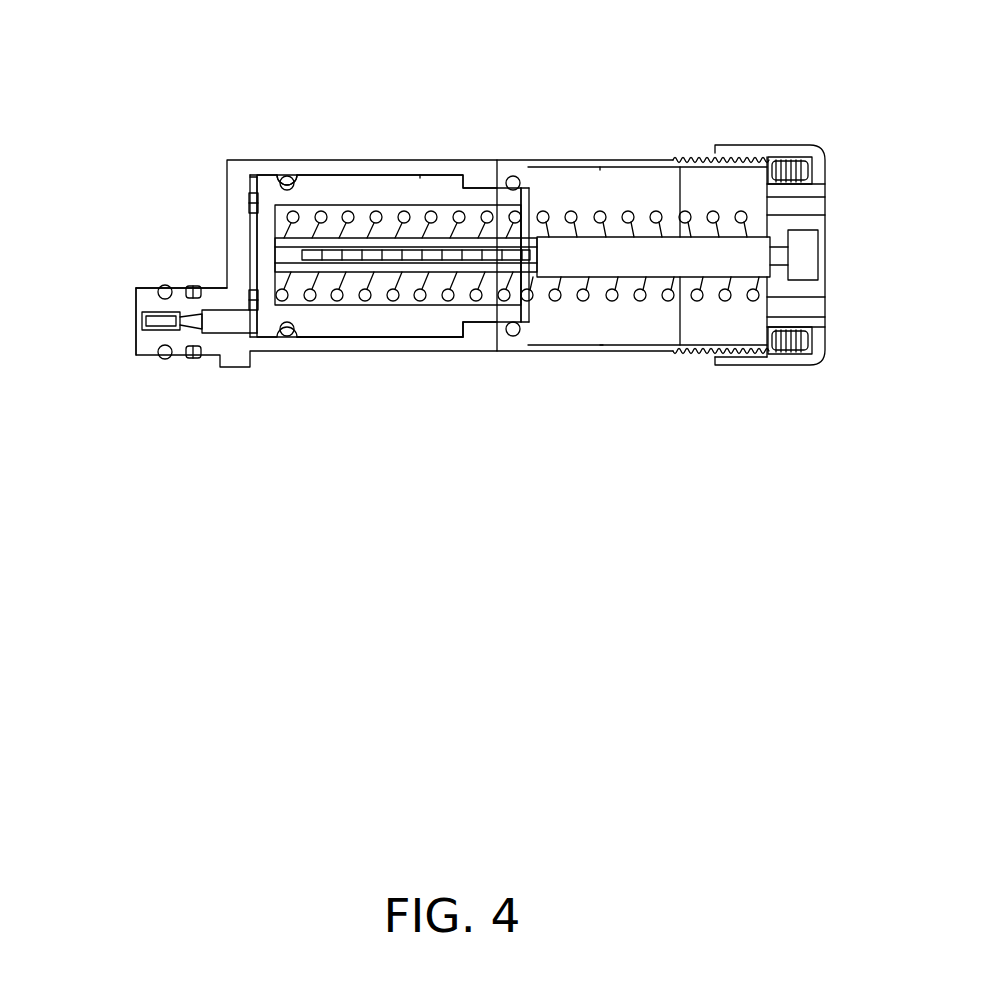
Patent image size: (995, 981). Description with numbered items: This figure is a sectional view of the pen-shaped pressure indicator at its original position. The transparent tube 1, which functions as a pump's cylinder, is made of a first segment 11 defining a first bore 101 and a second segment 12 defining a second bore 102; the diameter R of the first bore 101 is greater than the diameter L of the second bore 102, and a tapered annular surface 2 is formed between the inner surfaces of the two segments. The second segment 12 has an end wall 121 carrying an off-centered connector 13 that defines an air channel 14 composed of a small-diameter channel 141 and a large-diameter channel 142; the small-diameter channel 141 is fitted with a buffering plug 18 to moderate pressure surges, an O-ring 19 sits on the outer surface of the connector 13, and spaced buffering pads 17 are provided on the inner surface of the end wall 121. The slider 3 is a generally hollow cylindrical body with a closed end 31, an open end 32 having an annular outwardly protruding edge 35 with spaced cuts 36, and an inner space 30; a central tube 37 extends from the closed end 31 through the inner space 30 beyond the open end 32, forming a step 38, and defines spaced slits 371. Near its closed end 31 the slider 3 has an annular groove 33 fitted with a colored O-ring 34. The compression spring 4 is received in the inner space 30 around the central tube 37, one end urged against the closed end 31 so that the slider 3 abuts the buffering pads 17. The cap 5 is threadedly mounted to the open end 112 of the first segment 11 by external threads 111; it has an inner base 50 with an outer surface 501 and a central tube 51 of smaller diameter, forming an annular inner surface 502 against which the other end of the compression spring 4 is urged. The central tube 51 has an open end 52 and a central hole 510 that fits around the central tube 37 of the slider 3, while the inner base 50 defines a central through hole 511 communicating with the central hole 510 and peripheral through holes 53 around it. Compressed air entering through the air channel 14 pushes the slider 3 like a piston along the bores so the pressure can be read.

The transparent tube 1 is at (352, 162).
The tapered annular surface 2 is at (480, 330).
The slider 3 is at (383, 190).
The compression spring 4 is at (575, 300).
The cap 5 is at (787, 366).
The first segment 11 is at (645, 165).
The second segment 12 is at (322, 162).
The connector 13 is at (143, 297).
The air channel 14 is at (140, 327).
The buffering pads 17 is at (232, 168).
The buffering plug 18 is at (158, 298).
The O-ring 19 is at (165, 360).
The inner space 30 is at (441, 212).
The closed end 31 is at (263, 250).
The open end 32 is at (548, 236).
The annular groove 33 is at (272, 172).
The colored O-ring 34 is at (287, 176).
The annular outwardly protruding edge 35 is at (510, 330).
The spaced cuts 36 is at (533, 330).
The central tube 37 is at (372, 322).
The step 38 is at (290, 330).
The inner base 50 is at (795, 292).
The central tube 51 is at (683, 215).
The open end 52 is at (508, 178).
The peripheral through holes 53 is at (790, 362).
The first bore 101 is at (622, 190).
The second bore 102 is at (425, 186).
The external threads 111 is at (705, 160).
The open end 112 is at (787, 170).
The end wall 121 is at (235, 230).
The small-diameter channel 141 is at (188, 357).
The large-diameter channel 142 is at (200, 352).
The spaced slits 371 is at (430, 264).
The outer surface 501 is at (822, 212).
The annular inner surface 502 is at (752, 360).
The central hole 510 is at (634, 300).
The central through hole 511 is at (800, 256).
The diameter of the second bore L is at (358, 332).
The diameter of the first bore R is at (603, 355).